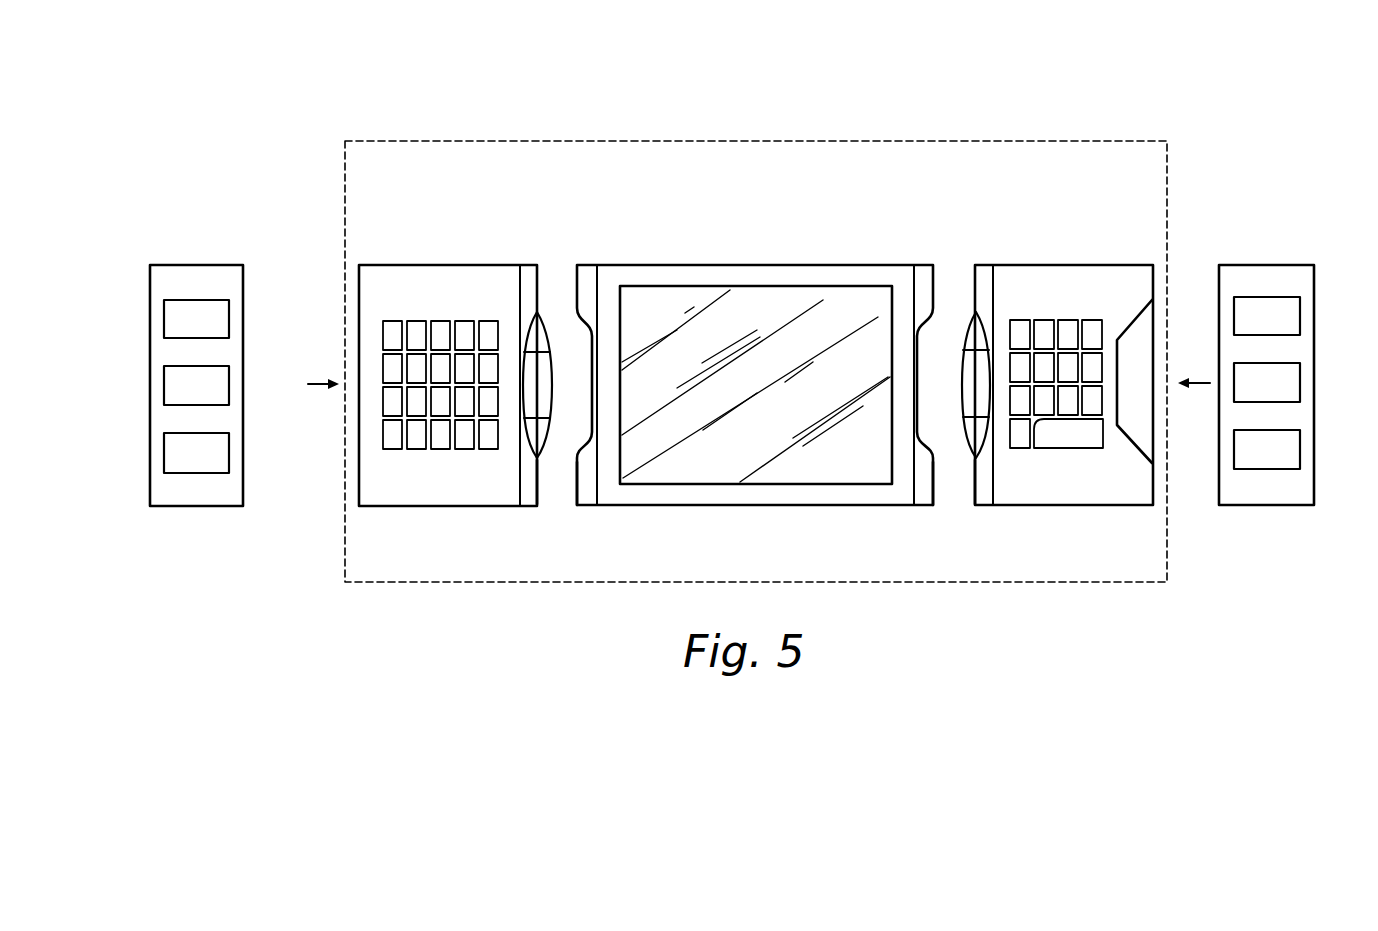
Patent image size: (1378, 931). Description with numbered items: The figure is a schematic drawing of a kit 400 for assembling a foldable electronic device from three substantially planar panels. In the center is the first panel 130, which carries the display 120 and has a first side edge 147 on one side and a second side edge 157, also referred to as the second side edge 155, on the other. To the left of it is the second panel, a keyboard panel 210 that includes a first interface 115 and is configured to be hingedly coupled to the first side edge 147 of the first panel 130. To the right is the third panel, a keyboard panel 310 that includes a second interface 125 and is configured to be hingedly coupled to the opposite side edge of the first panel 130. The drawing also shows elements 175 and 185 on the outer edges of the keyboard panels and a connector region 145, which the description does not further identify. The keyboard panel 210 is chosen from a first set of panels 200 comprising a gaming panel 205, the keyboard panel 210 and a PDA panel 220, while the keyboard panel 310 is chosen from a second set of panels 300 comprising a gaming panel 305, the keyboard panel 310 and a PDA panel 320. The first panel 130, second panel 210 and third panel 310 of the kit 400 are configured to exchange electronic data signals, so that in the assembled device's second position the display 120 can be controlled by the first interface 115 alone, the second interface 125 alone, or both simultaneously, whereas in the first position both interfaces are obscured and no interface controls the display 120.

The kit 400 is at (347, 79).
The first set of panels 200 is at (244, 363).
The gaming panel 205 is at (229, 314).
The keyboard panel 210 is at (229, 381).
The PDA panel 220 is at (229, 448).
The first interface 115 is at (417, 405).
The left hinge coupling 175 is at (537, 357).
The left module connector 145 is at (537, 487).
The first side edge 147 is at (578, 507).
The first panel 130 is at (758, 386).
The display 120 is at (747, 323).
The second side edge 157 is at (933, 507).
The right hinge coupling 185 is at (980, 370).
The second side edge 155 is at (974, 487).
The keyboard panel 310 is at (1300, 378).
The second interface 125 is at (1070, 403).
The second set of panels 300 is at (1274, 360).
The gaming panel 305 is at (1300, 310).
The PDA panel 320 is at (1300, 445).